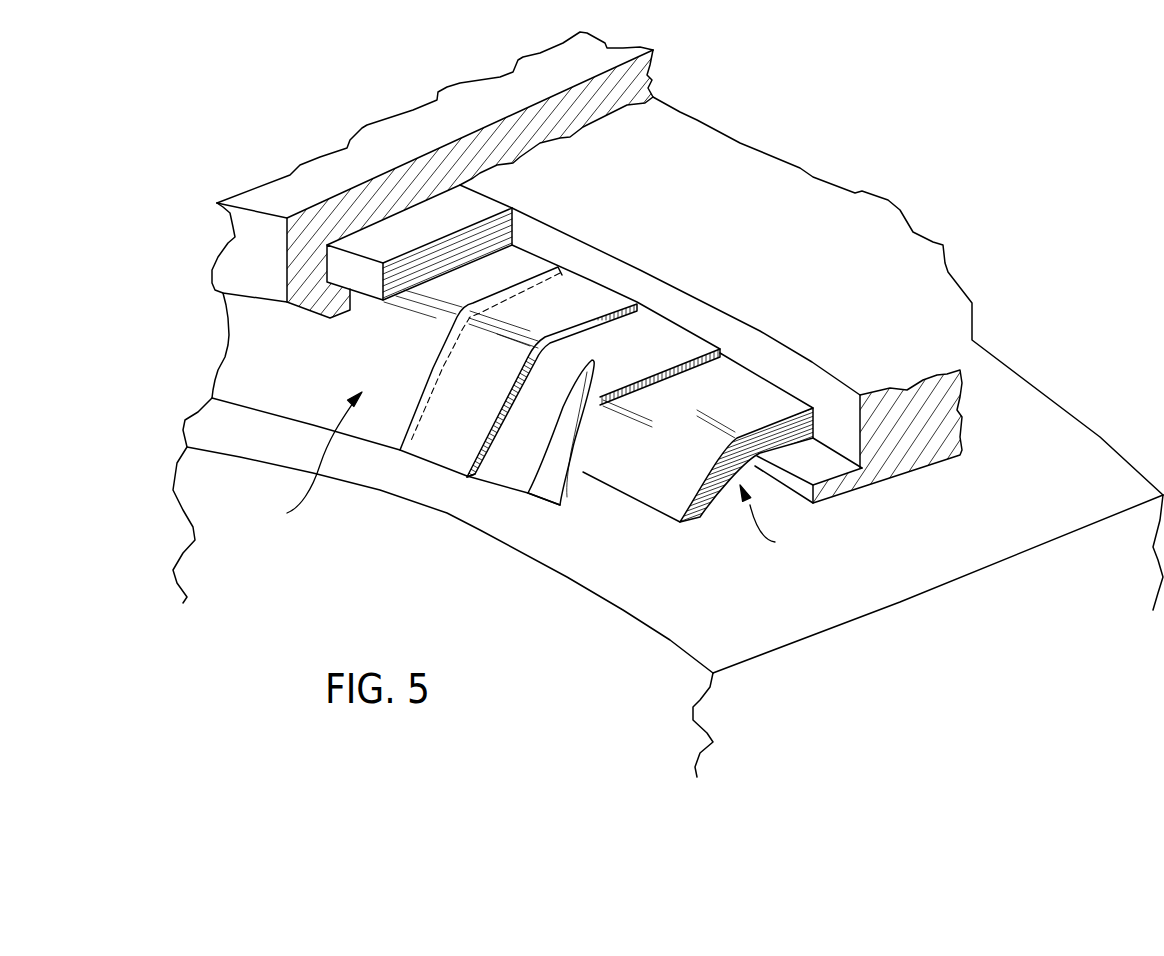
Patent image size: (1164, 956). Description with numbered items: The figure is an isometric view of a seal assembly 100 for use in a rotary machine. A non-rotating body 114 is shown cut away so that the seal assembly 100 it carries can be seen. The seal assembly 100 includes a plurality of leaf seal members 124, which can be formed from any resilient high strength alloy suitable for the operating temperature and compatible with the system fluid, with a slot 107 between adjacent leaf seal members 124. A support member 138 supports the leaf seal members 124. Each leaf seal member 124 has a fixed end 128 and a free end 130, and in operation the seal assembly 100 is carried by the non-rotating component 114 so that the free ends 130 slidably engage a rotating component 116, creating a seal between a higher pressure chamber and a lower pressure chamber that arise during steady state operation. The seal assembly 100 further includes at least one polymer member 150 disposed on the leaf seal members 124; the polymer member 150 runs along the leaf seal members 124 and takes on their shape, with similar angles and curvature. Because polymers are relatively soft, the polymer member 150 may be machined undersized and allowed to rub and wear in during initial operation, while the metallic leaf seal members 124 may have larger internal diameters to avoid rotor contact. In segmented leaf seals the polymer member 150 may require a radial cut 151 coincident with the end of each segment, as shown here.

The seal assembly 100 is at (322, 129).
The slot 107 is at (522, 472).
The non-rotating body 114 is at (670, 133).
The rotating component 116 is at (1072, 517).
The leaf seal member 124 is at (585, 408).
The fixed end 128 is at (666, 345).
The free end 130 is at (497, 463).
The support member 138 is at (655, 490).
The polymer member 150 is at (273, 357).
The radial cut 151 is at (423, 392).